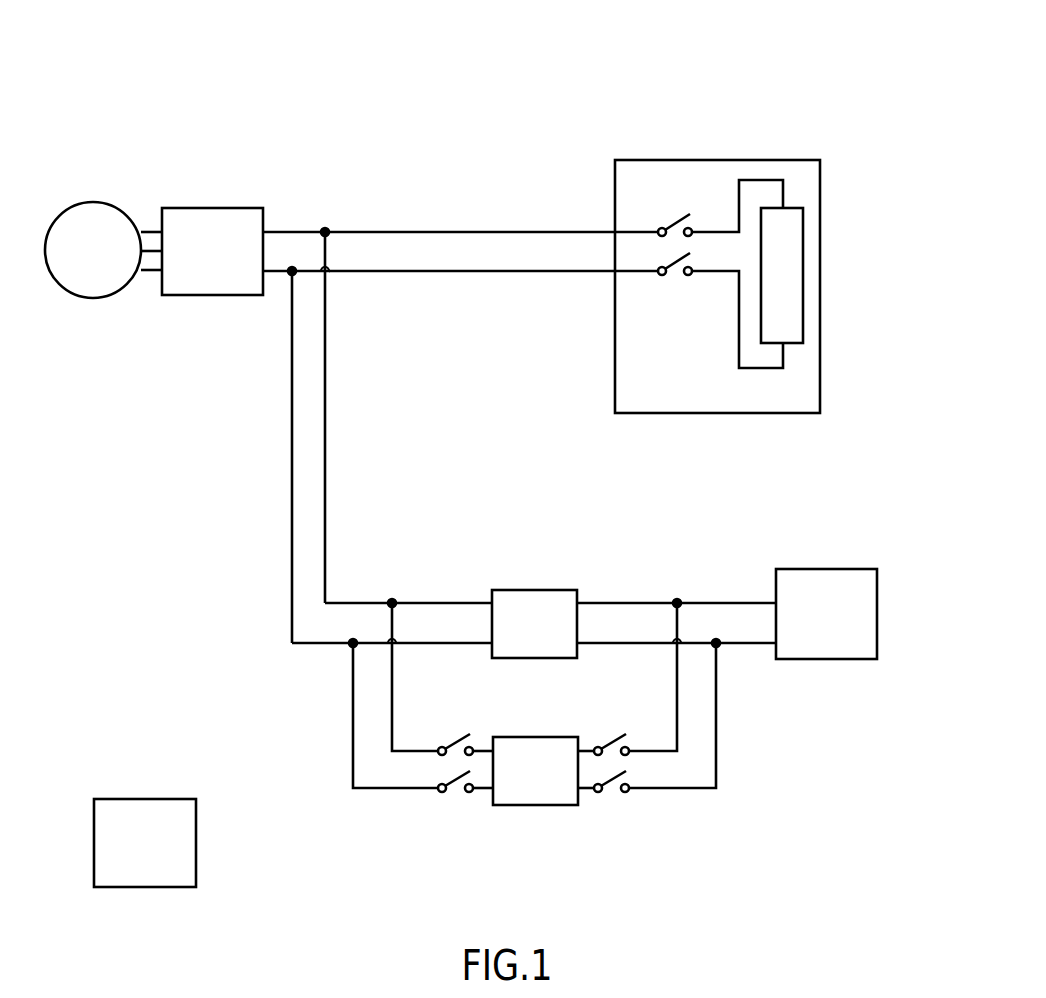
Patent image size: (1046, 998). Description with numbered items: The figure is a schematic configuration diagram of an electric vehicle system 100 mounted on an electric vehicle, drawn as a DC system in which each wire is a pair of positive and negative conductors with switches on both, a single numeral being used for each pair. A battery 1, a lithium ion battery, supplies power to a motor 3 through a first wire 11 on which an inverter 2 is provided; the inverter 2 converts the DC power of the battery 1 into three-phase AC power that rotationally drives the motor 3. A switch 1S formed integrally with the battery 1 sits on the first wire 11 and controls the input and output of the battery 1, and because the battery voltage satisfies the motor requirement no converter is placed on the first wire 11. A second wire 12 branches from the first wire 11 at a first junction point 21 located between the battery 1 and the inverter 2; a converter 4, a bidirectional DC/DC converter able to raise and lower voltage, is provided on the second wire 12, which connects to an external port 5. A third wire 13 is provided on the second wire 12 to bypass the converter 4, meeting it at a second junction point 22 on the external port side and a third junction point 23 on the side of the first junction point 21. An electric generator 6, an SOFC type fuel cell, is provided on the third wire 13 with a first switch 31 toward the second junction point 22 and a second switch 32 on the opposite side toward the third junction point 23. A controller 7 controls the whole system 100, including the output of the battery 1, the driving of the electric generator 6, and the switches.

The electric vehicle system 100 is at (651, 73).
The battery 1 is at (735, 160).
The switch 1S is at (678, 213).
The inverter 2 is at (227, 208).
The motor 3 is at (102, 203).
The converter 4 is at (534, 590).
The external port 5 is at (810, 569).
The electric generator 6 is at (515, 737).
The controller 7 is at (137, 798).
The first wire 11 is at (480, 230).
The second wire 12 is at (327, 313).
The third wire 13 is at (679, 685).
The first junction point 21 is at (325, 230).
The second junction point 22 is at (677, 601).
The third junction point 23 is at (392, 601).
The first switch 31 is at (618, 757).
The second switch 32 is at (457, 755).